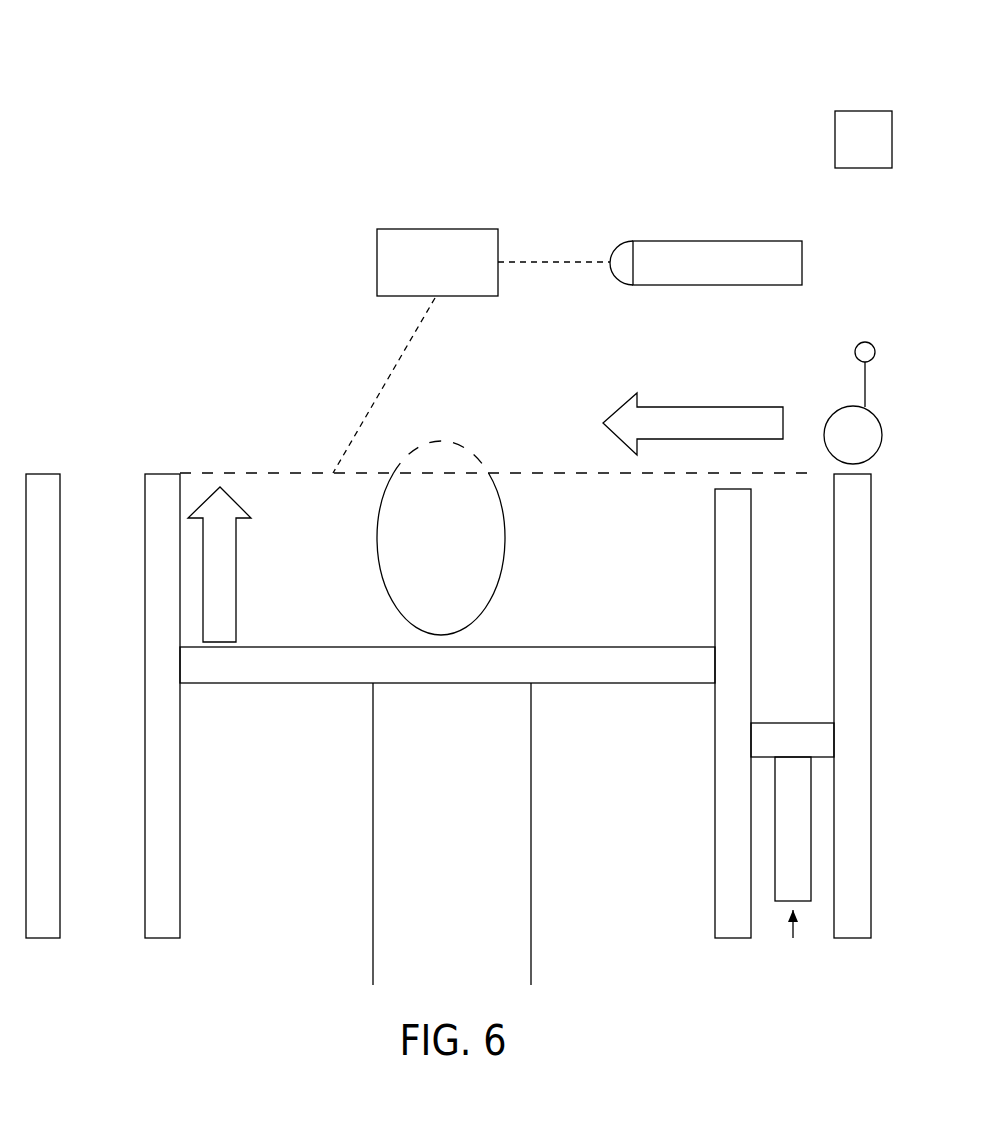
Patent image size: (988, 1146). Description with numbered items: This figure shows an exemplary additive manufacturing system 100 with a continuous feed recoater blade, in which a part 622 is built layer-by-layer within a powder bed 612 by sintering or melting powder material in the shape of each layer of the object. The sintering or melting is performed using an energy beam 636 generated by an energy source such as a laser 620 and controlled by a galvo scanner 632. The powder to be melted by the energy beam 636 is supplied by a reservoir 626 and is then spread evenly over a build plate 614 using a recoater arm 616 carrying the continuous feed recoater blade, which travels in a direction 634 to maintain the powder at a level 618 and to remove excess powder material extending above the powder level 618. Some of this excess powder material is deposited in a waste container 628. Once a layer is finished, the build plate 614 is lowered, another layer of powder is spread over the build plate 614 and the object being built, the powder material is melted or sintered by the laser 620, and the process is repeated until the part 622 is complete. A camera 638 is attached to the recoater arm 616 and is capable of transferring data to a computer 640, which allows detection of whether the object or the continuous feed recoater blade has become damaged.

The additive manufacturing system 100 is at (132, 92).
The build chamber 612 is at (565, 526).
The build plate 614 is at (665, 645).
The recoater arm 616 is at (850, 406).
The powder level 618 is at (232, 470).
The laser 620 is at (715, 241).
The part 622 is at (378, 540).
The reservoir 626 is at (800, 625).
The waste container 628 is at (101, 918).
The galvo scanner 632 is at (437, 229).
The direction 634 is at (638, 405).
The energy beam 636 is at (382, 387).
The camera 638 is at (877, 350).
The computer 640 is at (865, 111).